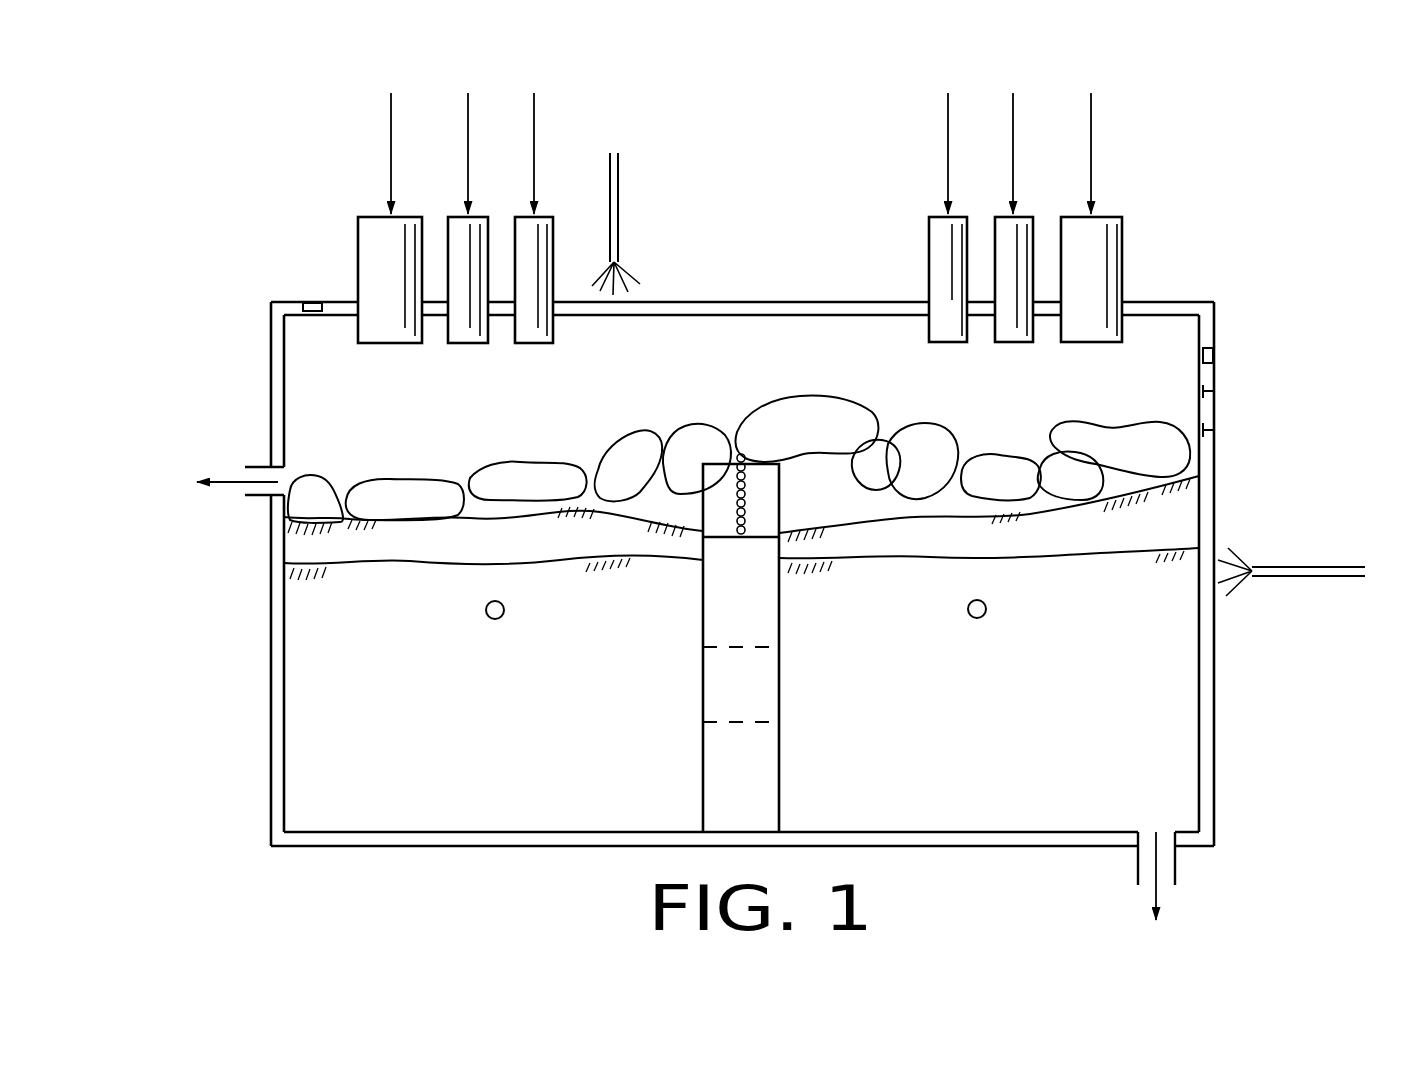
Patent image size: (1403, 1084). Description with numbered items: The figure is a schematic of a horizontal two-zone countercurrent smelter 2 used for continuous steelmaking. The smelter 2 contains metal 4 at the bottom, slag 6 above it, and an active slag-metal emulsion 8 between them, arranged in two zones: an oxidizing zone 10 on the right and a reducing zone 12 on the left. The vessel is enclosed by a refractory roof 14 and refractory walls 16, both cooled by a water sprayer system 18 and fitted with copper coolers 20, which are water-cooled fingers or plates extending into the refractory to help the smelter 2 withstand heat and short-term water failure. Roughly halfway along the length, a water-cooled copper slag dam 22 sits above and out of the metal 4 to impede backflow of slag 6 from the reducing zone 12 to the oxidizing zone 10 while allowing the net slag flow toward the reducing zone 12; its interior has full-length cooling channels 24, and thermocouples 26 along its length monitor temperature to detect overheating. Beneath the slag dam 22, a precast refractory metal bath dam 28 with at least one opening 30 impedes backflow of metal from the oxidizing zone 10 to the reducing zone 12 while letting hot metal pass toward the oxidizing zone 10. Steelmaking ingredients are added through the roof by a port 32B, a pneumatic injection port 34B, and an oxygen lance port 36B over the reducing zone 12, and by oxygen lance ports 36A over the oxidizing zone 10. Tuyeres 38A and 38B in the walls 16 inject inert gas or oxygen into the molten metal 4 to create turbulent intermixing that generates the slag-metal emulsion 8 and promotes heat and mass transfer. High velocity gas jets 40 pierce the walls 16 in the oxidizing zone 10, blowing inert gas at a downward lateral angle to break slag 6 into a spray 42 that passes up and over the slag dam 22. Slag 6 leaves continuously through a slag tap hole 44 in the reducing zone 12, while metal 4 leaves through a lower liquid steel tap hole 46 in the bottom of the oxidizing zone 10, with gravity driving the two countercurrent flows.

The horizontal smelter 2 is at (182, 739).
The metal 4 is at (1135, 683).
The slag 6 is at (1133, 428).
The slag-metal emulsion 8 is at (1175, 517).
The oxidizing zone 10 is at (1145, 348).
The reducing zone 12 is at (311, 413).
The roof 14 is at (277, 297).
The walls 16 is at (268, 445).
The water sprayer system 18 is at (621, 235).
The copper coolers 20 is at (307, 302).
The slag dam 22 is at (710, 460).
The cooling channels 24 is at (746, 478).
The thermocouples 26 is at (746, 462).
The metal bath dam 28 is at (715, 750).
The opening 30 is at (770, 695).
The port 32B is at (372, 223).
The pneumatic injection port 34B is at (460, 223).
The oxygen lance port 36B is at (523, 223).
The oxygen lance port 36A is at (937, 222).
The tuyere 38A is at (982, 620).
The tuyere 38B is at (500, 620).
The high velocity gas jets 40 is at (1214, 430).
The spray 42 is at (862, 413).
The slag tap hole 44 is at (262, 493).
The liquid steel tap hole 46 is at (1167, 855).